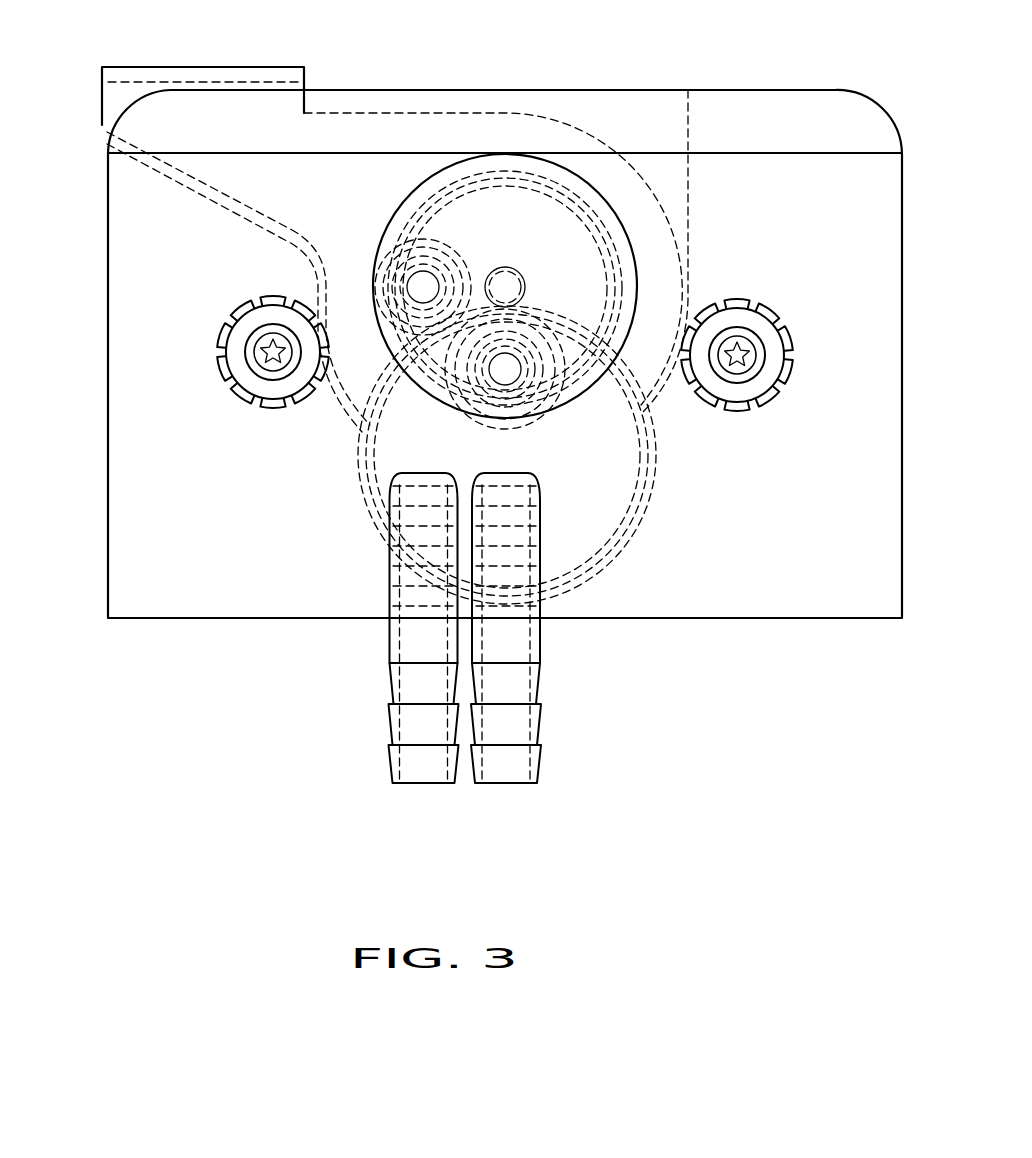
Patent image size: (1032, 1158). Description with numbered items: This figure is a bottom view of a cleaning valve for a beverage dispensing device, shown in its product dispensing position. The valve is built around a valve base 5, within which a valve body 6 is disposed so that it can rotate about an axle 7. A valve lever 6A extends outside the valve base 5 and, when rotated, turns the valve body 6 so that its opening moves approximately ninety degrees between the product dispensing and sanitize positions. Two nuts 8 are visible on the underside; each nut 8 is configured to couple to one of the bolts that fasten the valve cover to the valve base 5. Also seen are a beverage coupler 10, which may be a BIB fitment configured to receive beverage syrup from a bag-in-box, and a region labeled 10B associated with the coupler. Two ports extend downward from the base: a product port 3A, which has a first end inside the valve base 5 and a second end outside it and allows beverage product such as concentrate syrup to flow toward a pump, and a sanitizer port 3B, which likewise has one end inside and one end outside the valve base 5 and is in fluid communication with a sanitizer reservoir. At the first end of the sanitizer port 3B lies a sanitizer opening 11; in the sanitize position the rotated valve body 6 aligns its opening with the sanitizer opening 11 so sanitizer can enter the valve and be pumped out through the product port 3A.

The product port 3A is at (552, 748).
The sanitizer port 3B is at (376, 768).
The valve base 5 is at (790, 628).
The valve body 6 is at (265, 188).
The valve lever 6A is at (172, 67).
The axle 7 is at (522, 268).
The nut 8 is at (737, 288).
The beverage coupler 10 is at (642, 512).
The rotor shaft 10B is at (455, 367).
The sanitizer opening 11 is at (453, 250).